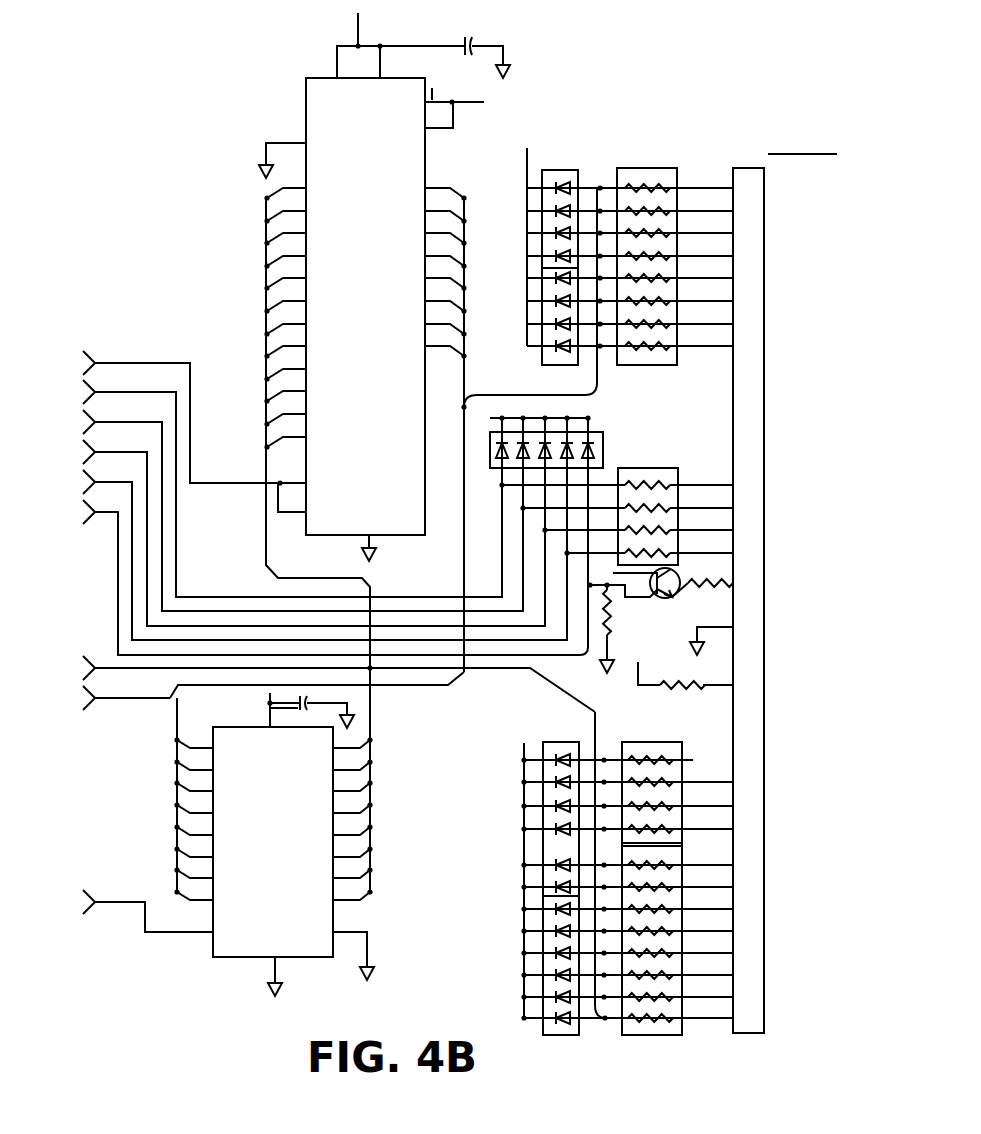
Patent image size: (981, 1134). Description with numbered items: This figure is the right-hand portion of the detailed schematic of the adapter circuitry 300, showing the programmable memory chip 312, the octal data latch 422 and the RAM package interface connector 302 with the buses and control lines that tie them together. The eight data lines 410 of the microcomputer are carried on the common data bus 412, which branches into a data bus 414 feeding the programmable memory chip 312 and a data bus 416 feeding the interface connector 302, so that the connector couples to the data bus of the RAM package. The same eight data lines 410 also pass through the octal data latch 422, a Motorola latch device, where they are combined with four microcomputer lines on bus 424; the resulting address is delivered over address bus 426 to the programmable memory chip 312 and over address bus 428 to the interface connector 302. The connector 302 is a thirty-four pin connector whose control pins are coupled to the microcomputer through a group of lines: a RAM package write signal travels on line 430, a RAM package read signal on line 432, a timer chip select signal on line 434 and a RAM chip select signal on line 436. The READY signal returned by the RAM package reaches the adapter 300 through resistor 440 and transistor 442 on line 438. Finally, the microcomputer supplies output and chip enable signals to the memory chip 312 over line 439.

The adapter circuitry 300 is at (267, 24).
The programmable memory chip 312 is at (306, 90).
The RAM package interface connector 302 is at (764, 392).
The data bus 414 is at (464, 366).
The data bus 416 is at (585, 398).
The address bus 426 is at (262, 510).
The line 430 is at (707, 506).
The line 432 is at (118, 381).
The line 434 is at (112, 440).
The line 436 is at (99, 470).
The line 438 is at (118, 522).
The line 439 is at (118, 362).
The bus 424 is at (153, 673).
The data lines 410 is at (151, 705).
The common data bus 412 is at (432, 688).
The octal data latch 422 is at (233, 958).
The address bus 428 is at (588, 686).
The resistor 440 is at (662, 616).
The transistor 442 is at (666, 597).